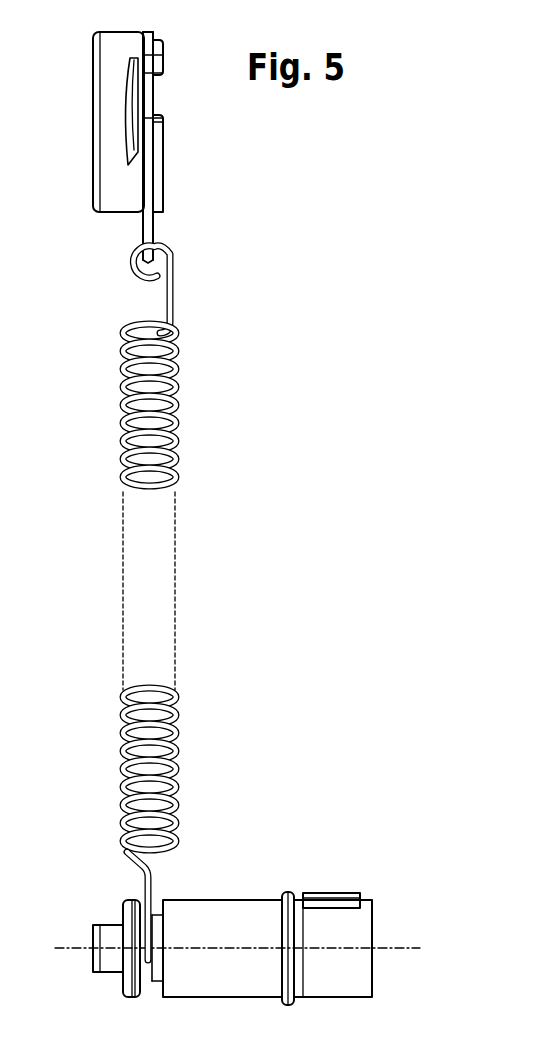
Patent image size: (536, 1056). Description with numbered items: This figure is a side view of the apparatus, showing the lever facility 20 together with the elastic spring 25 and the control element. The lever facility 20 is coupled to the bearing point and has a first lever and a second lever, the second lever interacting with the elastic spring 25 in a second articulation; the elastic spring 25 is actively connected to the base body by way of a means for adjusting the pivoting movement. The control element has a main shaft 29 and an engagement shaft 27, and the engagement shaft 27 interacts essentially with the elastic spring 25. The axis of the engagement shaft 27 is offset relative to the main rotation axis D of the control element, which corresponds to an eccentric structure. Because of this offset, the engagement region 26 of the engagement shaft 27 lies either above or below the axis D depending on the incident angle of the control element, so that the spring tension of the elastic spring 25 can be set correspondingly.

The lever facility 20 is at (245, 222).
The elastic spring 25 is at (178, 450).
The engagement region 26 is at (163, 895).
The engagement shaft 27 is at (140, 922).
The main shaft 29 is at (237, 920).